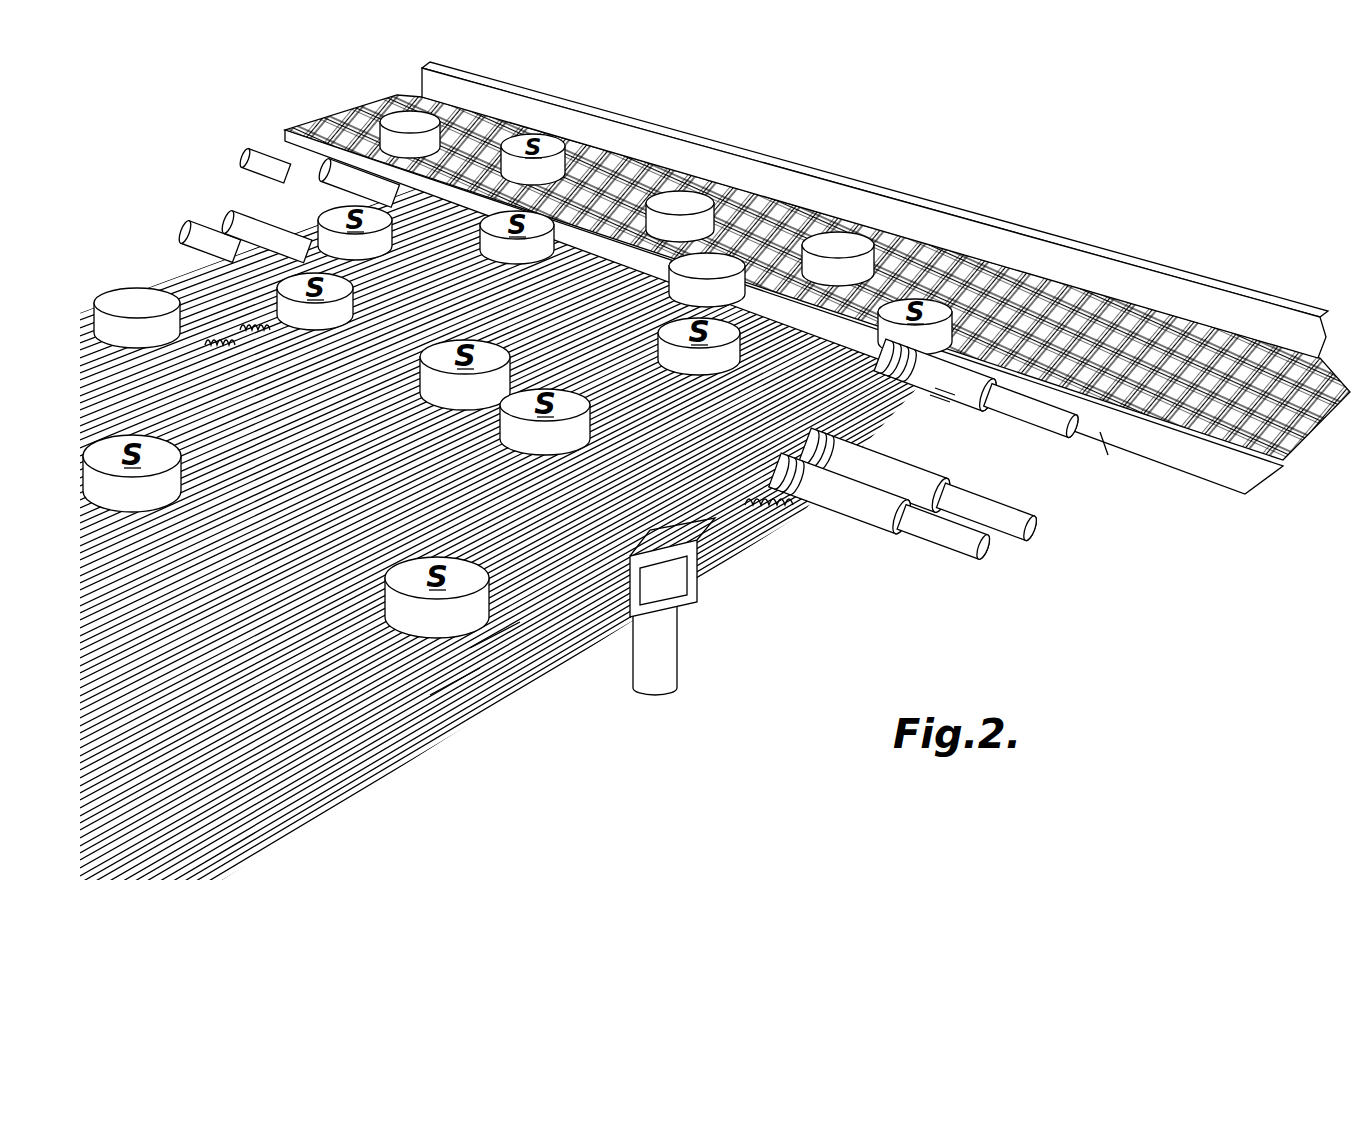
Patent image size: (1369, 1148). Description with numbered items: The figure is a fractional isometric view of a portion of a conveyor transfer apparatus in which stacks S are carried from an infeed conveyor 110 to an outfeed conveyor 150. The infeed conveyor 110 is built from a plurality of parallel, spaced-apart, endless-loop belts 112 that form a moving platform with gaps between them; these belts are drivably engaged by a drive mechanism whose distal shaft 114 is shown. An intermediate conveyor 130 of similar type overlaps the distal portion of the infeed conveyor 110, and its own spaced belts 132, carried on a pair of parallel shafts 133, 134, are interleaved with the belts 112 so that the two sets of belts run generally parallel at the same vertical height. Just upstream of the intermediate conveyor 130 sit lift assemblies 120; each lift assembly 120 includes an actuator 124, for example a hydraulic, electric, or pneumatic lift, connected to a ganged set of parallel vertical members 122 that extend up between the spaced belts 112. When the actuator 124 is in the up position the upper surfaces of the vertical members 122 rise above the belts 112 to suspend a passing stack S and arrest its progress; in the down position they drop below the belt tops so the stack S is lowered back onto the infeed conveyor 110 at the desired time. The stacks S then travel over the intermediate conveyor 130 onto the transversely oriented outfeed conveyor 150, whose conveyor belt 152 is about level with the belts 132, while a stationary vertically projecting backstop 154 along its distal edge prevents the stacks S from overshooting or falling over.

The infeed conveyor 110 is at (450, 745).
The endless-loop belts 112 is at (493, 636).
The distal shaft 114 is at (1025, 515).
The lift assembly 120 is at (690, 630).
The vertical members 122 is at (260, 330).
The actuator 124 is at (668, 655).
The intermediate conveyor 130 is at (1035, 445).
The intermediate conveyor belts 132 is at (962, 430).
The parallel shaft 133 is at (985, 545).
The parallel shaft 134 is at (1107, 445).
The outfeed conveyor 150 is at (875, 210).
The outfeed conveyor belt 152 is at (1135, 335).
The backstop 154 is at (978, 247).